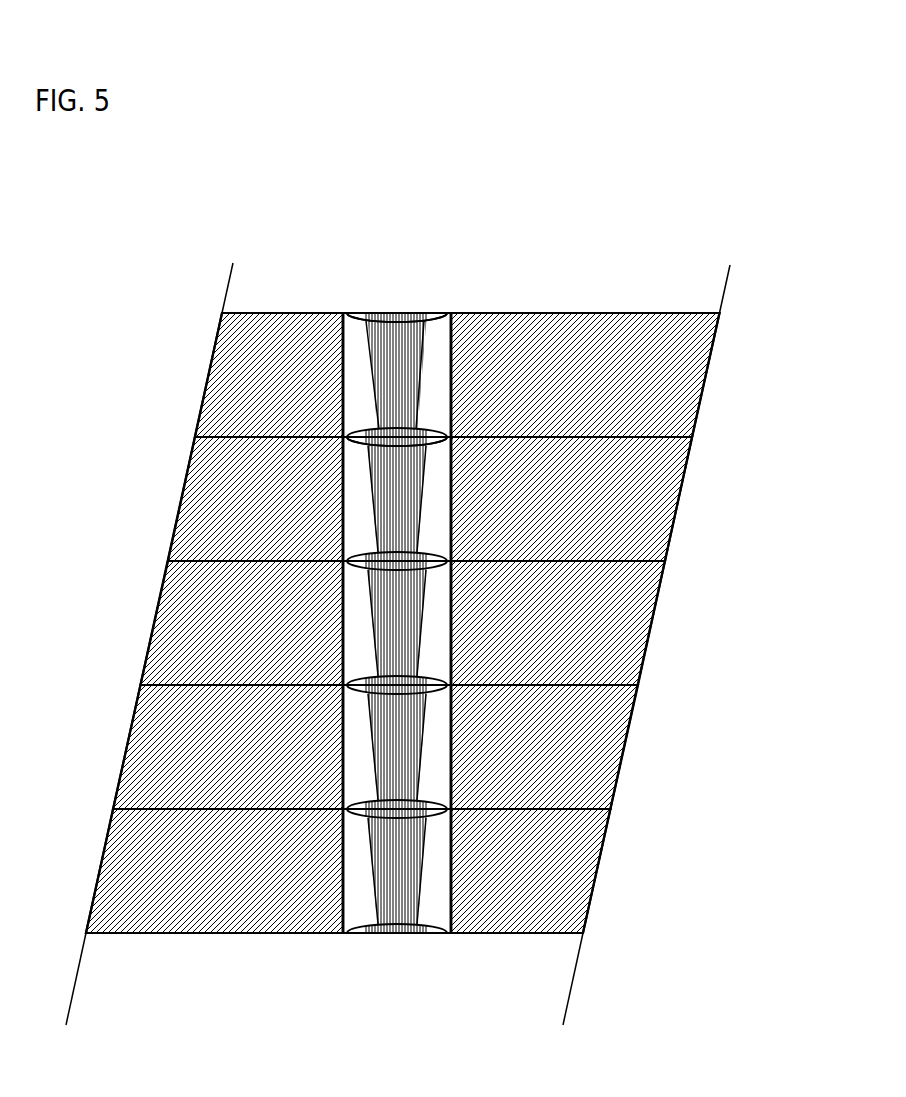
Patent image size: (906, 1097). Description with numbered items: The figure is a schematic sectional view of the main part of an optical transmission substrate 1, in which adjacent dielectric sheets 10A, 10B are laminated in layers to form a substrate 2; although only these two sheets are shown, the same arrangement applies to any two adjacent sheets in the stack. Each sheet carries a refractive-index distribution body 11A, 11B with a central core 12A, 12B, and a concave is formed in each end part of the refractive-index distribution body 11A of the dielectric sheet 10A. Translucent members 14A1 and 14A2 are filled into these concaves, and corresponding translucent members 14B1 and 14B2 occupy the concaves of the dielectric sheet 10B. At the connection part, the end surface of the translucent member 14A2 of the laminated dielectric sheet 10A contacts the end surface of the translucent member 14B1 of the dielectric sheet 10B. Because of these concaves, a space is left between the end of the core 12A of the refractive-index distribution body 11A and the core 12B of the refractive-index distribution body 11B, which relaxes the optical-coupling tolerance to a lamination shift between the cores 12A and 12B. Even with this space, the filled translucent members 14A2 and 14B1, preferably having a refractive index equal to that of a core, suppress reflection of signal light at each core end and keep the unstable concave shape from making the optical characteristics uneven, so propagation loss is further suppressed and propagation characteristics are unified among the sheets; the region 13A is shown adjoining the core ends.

The optical transmission substrate 1 is at (247, 200).
The substrate 2 is at (598, 300).
The dielectric sheet 10A is at (635, 360).
The dielectric sheet 10B is at (628, 473).
The refractive-index distribution body 11A is at (330, 348).
The refractive-index distribution body 11B is at (330, 507).
The core 12A is at (357, 303).
The core 12B is at (400, 492).
The through hole 13A is at (425, 360).
The translucent member 14A1 is at (402, 303).
The translucent member 14A2 is at (336, 424).
The translucent member 14B1 is at (336, 436).
The translucent member 14B2 is at (337, 546).